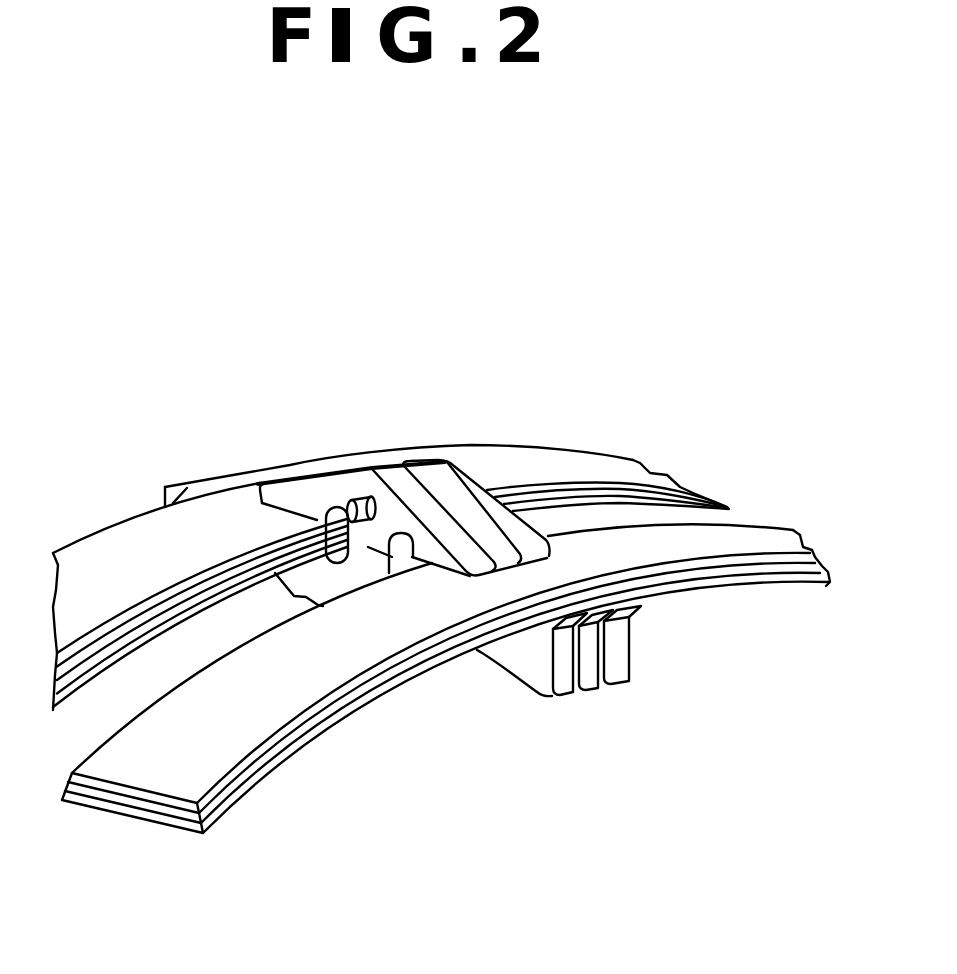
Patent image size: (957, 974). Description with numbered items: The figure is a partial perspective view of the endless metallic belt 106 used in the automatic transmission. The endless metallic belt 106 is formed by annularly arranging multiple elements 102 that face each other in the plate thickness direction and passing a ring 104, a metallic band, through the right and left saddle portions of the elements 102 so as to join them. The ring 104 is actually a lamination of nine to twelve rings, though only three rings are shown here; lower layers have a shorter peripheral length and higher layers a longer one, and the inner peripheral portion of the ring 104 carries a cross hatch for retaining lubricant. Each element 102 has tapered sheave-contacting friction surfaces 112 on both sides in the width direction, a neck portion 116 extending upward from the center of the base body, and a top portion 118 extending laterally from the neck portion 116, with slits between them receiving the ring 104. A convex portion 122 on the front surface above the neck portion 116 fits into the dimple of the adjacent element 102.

The element 102 is at (619, 708).
The ring 104 is at (613, 462).
The endless metallic belt 106 is at (374, 532).
The sheave-contacting friction surface 112 is at (692, 659).
The neck portion 116 is at (398, 540).
The top portion 118 is at (402, 485).
The convex portion 122 is at (337, 465).